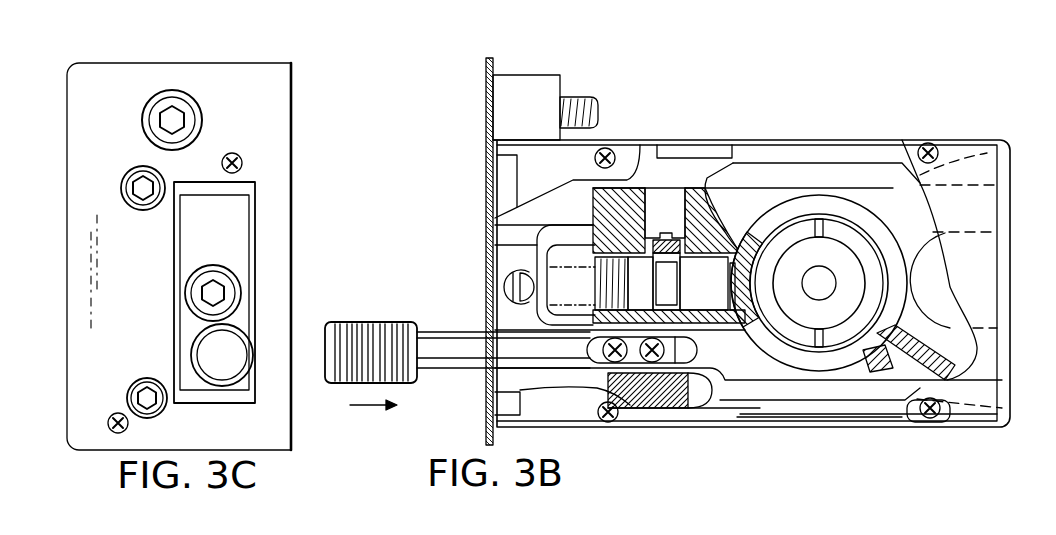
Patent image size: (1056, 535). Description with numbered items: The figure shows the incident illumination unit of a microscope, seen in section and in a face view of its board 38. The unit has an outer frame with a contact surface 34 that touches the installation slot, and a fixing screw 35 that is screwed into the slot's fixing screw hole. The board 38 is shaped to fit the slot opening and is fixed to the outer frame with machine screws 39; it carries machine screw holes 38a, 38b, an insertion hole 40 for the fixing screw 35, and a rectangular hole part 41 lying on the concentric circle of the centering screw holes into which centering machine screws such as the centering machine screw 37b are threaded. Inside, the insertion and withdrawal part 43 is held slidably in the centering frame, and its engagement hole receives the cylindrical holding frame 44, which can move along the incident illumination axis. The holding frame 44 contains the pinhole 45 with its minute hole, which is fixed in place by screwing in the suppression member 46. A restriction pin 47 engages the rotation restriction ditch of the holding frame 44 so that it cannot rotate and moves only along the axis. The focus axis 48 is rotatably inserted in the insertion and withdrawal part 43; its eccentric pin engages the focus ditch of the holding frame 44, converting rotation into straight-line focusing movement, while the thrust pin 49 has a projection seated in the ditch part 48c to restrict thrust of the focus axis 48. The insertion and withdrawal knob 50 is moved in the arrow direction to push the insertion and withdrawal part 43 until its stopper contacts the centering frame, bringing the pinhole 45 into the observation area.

In FIG. 3B, the contact surface 34 is at (560, 78).
In FIG. 3B, the fixing screw 35 is at (598, 105).
In FIG. 3B, the centering machine screw 37b is at (638, 410).
In FIG. 3C, the board 38 is at (285, 95).
In FIG. 3B, the board 38 is at (486, 72).
In FIG. 3C, the machine screw hole 38a is at (125, 183).
In FIG. 3C, the machine screw hole 38b is at (147, 378).
In FIG. 3C, the machine screw 39 is at (245, 160).
In FIG. 3C, the insertion hole 40 is at (172, 90).
In FIG. 3C, the rectangular hole part 41 is at (253, 215).
In FIG. 3B, the insertion and withdrawal part 43 is at (766, 370).
In FIG. 3B, the holding frame 44 is at (886, 236).
In FIG. 3B, the pinhole 45 is at (803, 260).
In FIG. 3B, the suppression member 46 is at (838, 228).
In FIG. 3B, the restriction pin 47 is at (897, 370).
In FIG. 3B, the focus axis 48 is at (612, 273).
In FIG. 3B, the ditch part 48c is at (703, 282).
In FIG. 3B, the thrust pin 49 is at (670, 232).
In FIG. 3B, the insertion and withdrawal knob 50 is at (368, 322).